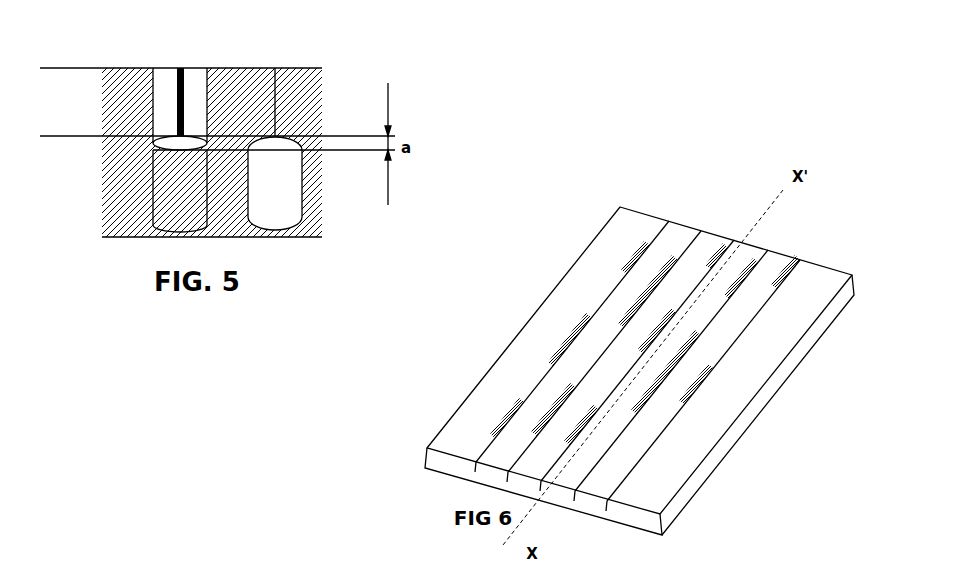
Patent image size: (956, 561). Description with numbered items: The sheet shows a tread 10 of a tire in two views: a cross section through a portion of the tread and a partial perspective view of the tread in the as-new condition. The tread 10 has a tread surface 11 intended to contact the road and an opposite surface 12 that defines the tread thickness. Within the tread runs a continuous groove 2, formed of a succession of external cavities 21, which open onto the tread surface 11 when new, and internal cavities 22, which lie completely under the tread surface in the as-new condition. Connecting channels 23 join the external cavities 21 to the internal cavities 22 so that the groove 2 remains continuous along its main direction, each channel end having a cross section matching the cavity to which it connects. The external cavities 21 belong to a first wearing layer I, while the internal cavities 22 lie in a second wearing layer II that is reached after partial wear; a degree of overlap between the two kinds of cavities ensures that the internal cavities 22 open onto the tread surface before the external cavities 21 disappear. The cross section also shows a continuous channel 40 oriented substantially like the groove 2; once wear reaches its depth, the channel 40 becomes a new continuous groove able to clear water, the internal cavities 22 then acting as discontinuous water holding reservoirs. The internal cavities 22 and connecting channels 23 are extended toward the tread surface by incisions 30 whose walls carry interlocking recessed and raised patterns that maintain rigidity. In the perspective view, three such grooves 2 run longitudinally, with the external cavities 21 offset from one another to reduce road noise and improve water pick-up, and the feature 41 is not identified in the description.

In FIG. 5, the continuous groove 2 is at (167, 83).
In FIG. 6, the continuous groove 2 is at (793, 262).
In FIG. 5, the incisions 30 is at (177, 80).
In FIG. 5, the external cavities 21 is at (200, 80).
In FIG. 6, the external cavities 21 is at (806, 278).
In FIG. 5, the tread surface 11 is at (293, 60).
In FIG. 6, the tread surface 11 is at (577, 298).
In FIG. 5, the first wearing layer I is at (127, 127).
In FIG. 5, the second wearing layer II is at (148, 190).
In FIG. 5, the tread 10 is at (303, 117).
In FIG. 5, the continuous channel 40 is at (285, 196).
In FIG. 5, the internal cavities 22 is at (170, 201).
In FIG. 5, the surface defining the thickness of the tread 12 is at (235, 252).
In FIG. 6, the lands between grooves 41 is at (600, 455).
In FIG. 6, the connecting channels 23 is at (718, 366).